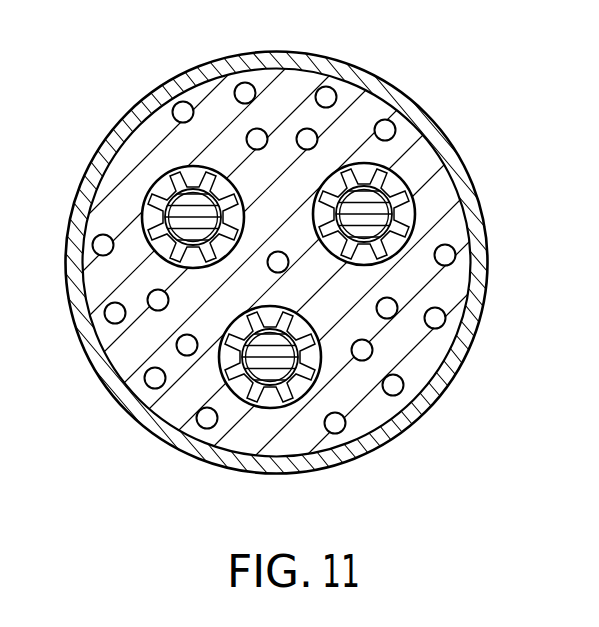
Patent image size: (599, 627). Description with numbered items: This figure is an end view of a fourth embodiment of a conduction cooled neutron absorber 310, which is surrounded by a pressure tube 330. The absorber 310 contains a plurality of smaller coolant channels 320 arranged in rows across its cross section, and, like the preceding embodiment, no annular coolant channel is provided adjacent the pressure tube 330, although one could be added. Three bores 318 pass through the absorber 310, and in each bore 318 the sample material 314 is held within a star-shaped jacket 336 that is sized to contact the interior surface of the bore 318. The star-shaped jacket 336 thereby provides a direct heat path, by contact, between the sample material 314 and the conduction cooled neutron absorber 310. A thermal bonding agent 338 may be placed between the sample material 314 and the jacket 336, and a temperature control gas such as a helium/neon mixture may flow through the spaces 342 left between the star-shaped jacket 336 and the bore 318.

The conduction cooled neutron absorber 310 is at (403, 355).
The sample material 314 is at (183, 207).
The bore 318 is at (359, 267).
The coolant channels 320 is at (453, 248).
The pressure tube 330 is at (373, 451).
The star-shaped jacket 336 is at (240, 383).
The thermal bonding agent 338 is at (162, 204).
The spaces 342 is at (250, 403).